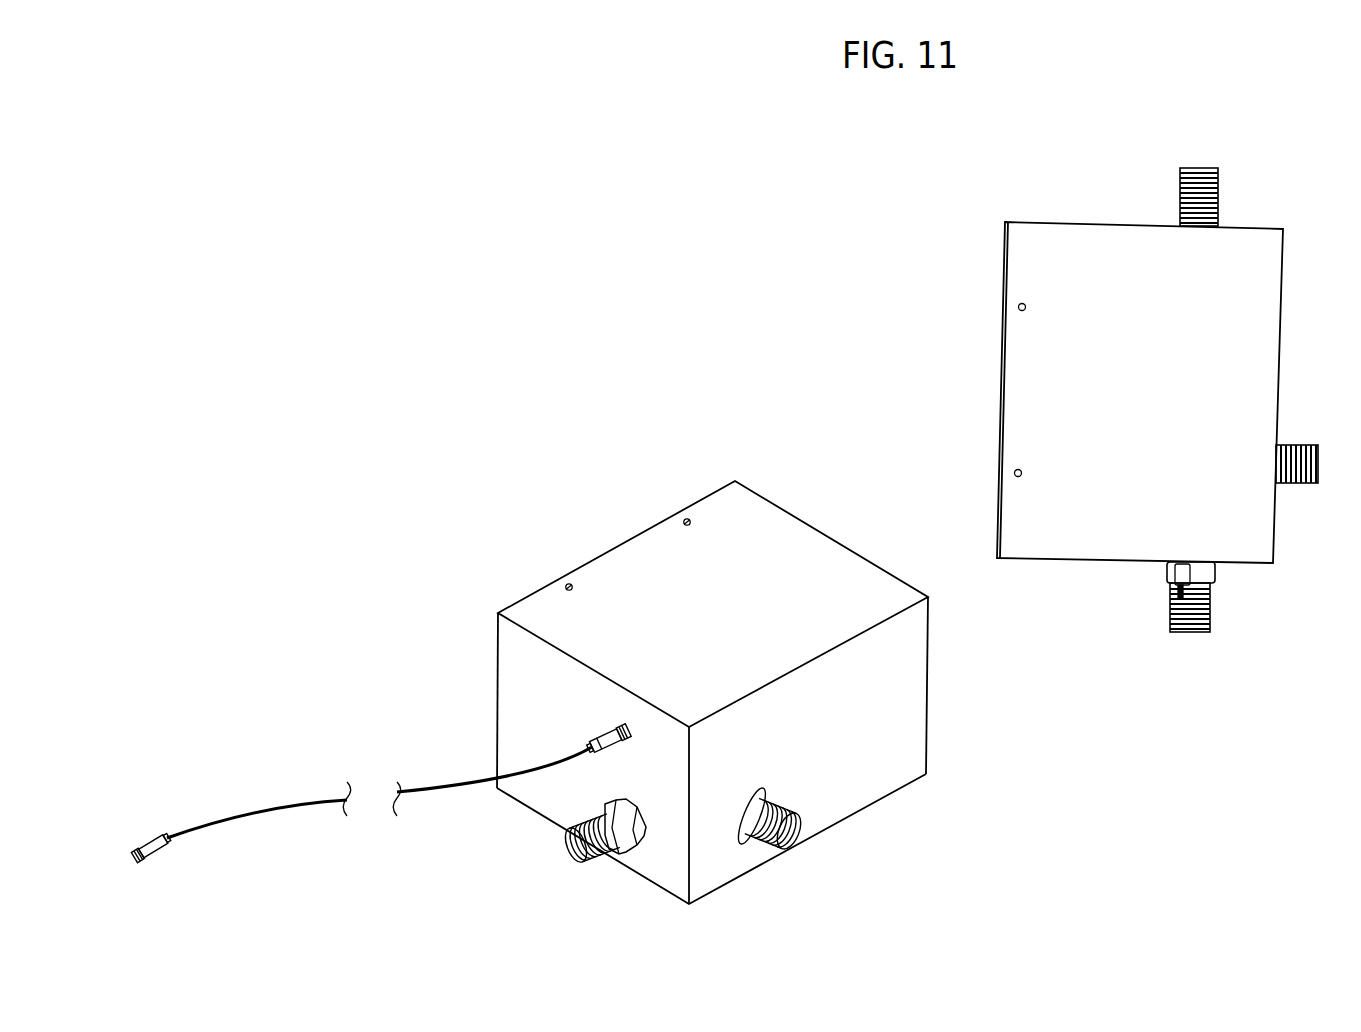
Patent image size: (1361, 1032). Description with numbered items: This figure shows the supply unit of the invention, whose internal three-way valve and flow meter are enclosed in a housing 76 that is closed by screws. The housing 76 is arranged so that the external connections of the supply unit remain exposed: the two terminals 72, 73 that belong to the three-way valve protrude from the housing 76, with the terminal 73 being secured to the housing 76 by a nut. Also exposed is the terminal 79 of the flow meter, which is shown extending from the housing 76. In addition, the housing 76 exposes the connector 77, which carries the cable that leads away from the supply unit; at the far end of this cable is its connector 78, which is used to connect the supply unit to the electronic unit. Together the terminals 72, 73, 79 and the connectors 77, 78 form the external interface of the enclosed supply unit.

The terminal 72 is at (1313, 487).
The terminal 73 is at (1205, 635).
The housing 76 is at (748, 582).
The connector 77 is at (602, 732).
The connector 78 is at (160, 837).
The terminal 79 is at (1220, 168).